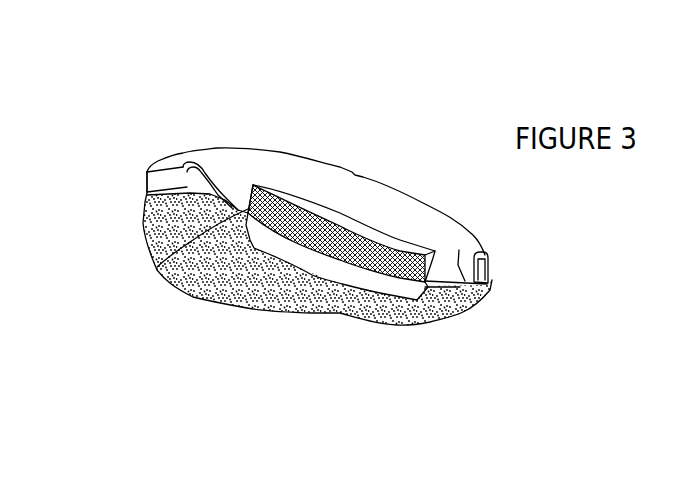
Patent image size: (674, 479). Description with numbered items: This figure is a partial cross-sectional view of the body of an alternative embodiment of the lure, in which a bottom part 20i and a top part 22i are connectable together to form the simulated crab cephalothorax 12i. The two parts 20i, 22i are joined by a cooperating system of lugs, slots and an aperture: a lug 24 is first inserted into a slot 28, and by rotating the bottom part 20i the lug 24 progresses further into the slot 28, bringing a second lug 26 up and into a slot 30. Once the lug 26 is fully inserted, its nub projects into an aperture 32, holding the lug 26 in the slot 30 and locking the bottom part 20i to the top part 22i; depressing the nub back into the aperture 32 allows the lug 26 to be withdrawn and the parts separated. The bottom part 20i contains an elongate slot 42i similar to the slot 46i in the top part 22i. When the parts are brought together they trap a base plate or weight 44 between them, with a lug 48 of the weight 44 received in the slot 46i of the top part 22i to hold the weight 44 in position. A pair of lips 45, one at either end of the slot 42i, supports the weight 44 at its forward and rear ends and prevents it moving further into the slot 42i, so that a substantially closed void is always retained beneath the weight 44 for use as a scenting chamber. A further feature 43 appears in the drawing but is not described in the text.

The simulated crab cephalothorax 12i is at (483, 322).
The bottom part 20i is at (227, 293).
The top part 22i is at (308, 165).
The lug 24 is at (192, 163).
The lug 26 is at (478, 242).
The slot 28 is at (147, 172).
The slot 30 is at (459, 250).
The aperture 32 is at (488, 252).
The elongate slot 42i is at (298, 259).
The inner layer boundary 43 is at (157, 267).
The weight 44 is at (355, 232).
The lips 45 is at (430, 250).
The slot 46i is at (428, 210).
The lug 48 is at (258, 183).